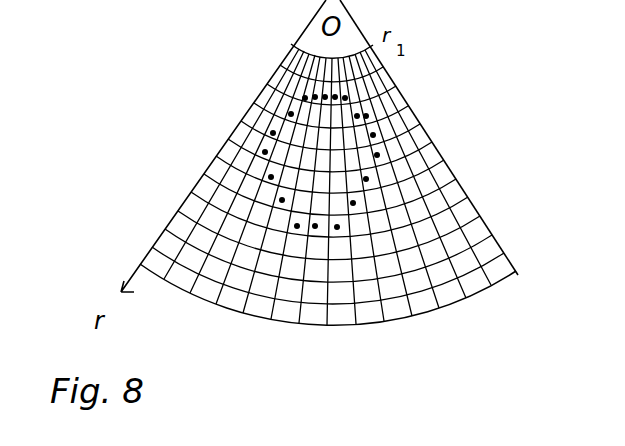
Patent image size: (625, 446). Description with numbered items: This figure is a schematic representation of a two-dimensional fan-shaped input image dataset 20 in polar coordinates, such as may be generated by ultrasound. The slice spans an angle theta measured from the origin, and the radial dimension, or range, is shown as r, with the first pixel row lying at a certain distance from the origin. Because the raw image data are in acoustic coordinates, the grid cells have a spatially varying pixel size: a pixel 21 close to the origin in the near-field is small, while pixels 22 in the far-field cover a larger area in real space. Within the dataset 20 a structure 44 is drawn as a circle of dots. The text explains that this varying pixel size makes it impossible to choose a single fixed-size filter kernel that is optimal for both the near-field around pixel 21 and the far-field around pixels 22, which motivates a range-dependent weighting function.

The image dataset 20 is at (456, 105).
The pixel 21 is at (273, 82).
The pixels 22 is at (151, 258).
The structure 44 is at (385, 153).